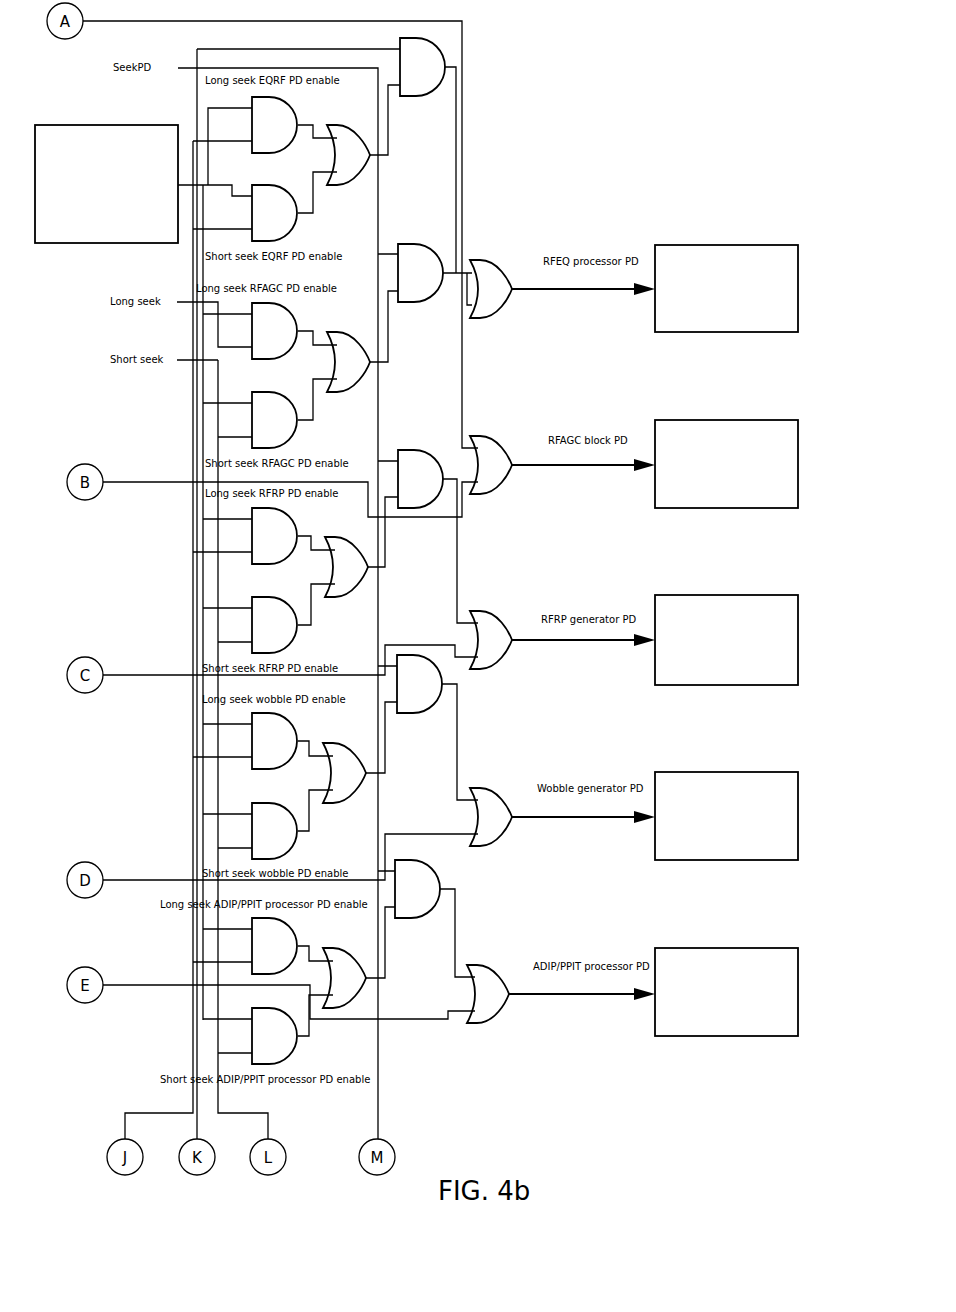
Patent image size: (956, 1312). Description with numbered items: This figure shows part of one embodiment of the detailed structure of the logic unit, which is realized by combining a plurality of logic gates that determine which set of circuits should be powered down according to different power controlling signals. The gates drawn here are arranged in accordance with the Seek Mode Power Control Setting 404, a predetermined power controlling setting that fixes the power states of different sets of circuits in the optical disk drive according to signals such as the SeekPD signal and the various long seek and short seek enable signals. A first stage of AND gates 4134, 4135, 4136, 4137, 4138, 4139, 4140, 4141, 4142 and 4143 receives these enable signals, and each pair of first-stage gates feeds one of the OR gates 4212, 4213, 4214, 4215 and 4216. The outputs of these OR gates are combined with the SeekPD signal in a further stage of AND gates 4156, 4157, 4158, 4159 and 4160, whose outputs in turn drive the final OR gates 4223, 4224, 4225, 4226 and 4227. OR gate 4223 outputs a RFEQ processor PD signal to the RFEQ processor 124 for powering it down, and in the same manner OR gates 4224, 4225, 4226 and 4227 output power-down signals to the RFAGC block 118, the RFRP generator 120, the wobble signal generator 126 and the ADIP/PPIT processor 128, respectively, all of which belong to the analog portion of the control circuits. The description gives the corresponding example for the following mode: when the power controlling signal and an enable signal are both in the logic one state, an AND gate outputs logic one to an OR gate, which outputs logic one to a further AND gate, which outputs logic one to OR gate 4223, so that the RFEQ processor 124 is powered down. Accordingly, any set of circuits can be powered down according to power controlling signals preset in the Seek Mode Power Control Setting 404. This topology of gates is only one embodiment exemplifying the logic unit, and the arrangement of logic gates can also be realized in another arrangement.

The Seek Mode Power Control Setting 404 is at (62, 243).
The AND gate (long seek EQRF PD enable) 4134 is at (274, 125).
The AND gate (short seek EQRF PD enable) 4135 is at (274, 213).
The AND gate (long seek RFAGC PD enable) 4136 is at (274, 331).
The AND gate (short seek RFAGC PD enable) 4137 is at (274, 420).
The AND gate (long seek RFRP PD enable) 4138 is at (274, 536).
The AND gate (short seek RFRP PD enable) 4139 is at (274, 625).
The AND gate (long seek wobble PD enable) 4140 is at (274, 741).
The AND gate (short seek wobble PD enable) 4141 is at (274, 831).
The AND gate (long seek ADIP/PPIT processor PD enable) 4142 is at (274, 946).
The AND gate (short seek ADIP/PPIT processor PD enable) 4143 is at (274, 1036).
The OR gate 4212 is at (348, 155).
The OR gate 4213 is at (348, 362).
The OR gate 4214 is at (346, 567).
The OR gate 4215 is at (344, 773).
The OR gate 4216 is at (344, 978).
The AND gate (SeekPD) 4156 is at (422, 67).
The AND gate (SeekPD) 4157 is at (420, 273).
The AND gate (SeekPD) 4158 is at (420, 479).
The AND gate (SeekPD) 4159 is at (419, 684).
The AND gate (SeekPD) 4160 is at (417, 889).
The OR gate 4223 is at (491, 289).
The OR gate (RFAGC block PD) 4224 is at (491, 465).
The OR gate (RFRP generator PD) 4225 is at (491, 640).
The OR gate (wobble generator PD) 4226 is at (491, 817).
The OR gate (ADIP/PPIT processor PD) 4227 is at (488, 994).
The RFEQ processor 124 is at (768, 332).
The RFAGC block 118 is at (768, 508).
The RFRP generator 120 is at (768, 685).
The wobble signal generator 126 is at (768, 860).
The ADIP/PPIT processor 128 is at (768, 1036).